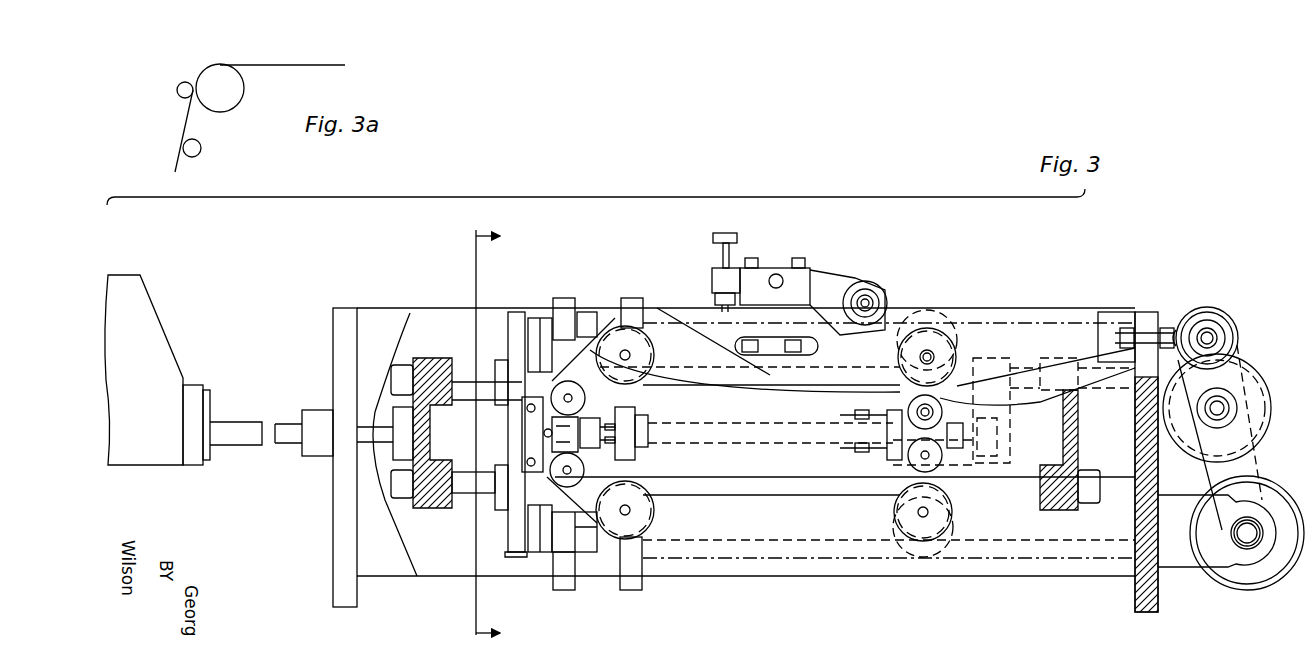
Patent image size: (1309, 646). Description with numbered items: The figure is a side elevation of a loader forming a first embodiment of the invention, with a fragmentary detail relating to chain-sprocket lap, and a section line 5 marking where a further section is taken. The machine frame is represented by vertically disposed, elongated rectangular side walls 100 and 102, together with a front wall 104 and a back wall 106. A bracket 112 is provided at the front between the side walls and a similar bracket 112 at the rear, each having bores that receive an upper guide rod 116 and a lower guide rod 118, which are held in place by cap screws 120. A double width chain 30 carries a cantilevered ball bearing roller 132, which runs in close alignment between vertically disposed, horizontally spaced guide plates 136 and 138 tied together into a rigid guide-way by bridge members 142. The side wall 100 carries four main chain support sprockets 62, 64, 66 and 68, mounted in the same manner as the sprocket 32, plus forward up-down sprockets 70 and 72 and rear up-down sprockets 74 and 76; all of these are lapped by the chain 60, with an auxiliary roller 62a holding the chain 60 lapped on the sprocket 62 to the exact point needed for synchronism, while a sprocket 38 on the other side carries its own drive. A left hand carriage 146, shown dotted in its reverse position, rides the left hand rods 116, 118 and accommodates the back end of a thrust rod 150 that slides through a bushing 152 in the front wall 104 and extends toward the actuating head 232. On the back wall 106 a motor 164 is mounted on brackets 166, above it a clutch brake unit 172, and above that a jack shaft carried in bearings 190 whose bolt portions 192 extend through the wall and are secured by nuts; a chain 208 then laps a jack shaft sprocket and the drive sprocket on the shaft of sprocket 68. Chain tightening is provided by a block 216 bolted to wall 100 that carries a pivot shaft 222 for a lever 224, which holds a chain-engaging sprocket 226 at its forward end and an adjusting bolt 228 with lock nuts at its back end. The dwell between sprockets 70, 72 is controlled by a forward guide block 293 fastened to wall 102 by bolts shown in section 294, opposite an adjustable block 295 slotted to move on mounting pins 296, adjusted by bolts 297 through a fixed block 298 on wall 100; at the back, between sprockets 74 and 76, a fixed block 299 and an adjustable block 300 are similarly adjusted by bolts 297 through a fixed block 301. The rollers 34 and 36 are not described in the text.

In FIG. 3, the section line 5 is at (499, 435).
In FIG. 3, the double width chain 30 is at (770, 574).
In FIG. 3, the sprocket 32 is at (607, 332).
In FIG. 3, the lower roller 34 is at (655, 523).
In FIG. 3, the lower gear 36 is at (940, 542).
In FIG. 3, the sprocket 38 is at (925, 312).
In FIG. 3A, the chain 60 is at (302, 63).
In FIG. 3, the chain 60 is at (722, 538).
In FIG. 3A, the main chain support sprocket 62 is at (232, 93).
In FIG. 3, the main chain support sprocket 62 is at (656, 353).
In FIG. 3A, the auxiliary roller 62a is at (177, 90).
In FIG. 3, the main chain support sprocket 64 is at (655, 507).
In FIG. 3, the main chain support sprocket 66 is at (900, 514).
In FIG. 3, the main chain support sprocket 68 is at (899, 356).
In FIG. 3A, the forward up-down sprocket 70 is at (201, 148).
In FIG. 3, the forward up-down sprocket 70 is at (579, 396).
In FIG. 3, the forward up-down sprocket 72 is at (560, 484).
In FIG. 3, the rear up-down sprocket 74 is at (935, 465).
In FIG. 3, the rear up-down sprocket 76 is at (905, 402).
In FIG. 3, the side wall 100 is at (374, 310).
In FIG. 3, the side wall 102 is at (436, 310).
In FIG. 3, the front wall 104 is at (345, 611).
In FIG. 3, the back wall 106 is at (1148, 612).
In FIG. 3, the bracket 112 is at (436, 359).
In FIG. 3, the upper guide rod 116 is at (489, 372).
In FIG. 3, the lower guide rod 118 is at (460, 497).
In FIG. 3, the cap screw 120 is at (400, 490).
In FIG. 3, the cantilevered roller 132 is at (548, 433).
In FIG. 3, the guide plate 136 is at (515, 310).
In FIG. 3, the guide plate 138 is at (632, 298).
In FIG. 3, the bridge member 142 is at (534, 310).
In FIG. 3, the left hand carriage 146 is at (497, 508).
In FIG. 3, the thrust rod 150 is at (238, 422).
In FIG. 3, the bushing 152 is at (321, 412).
In FIG. 3, the motor 164 is at (1285, 478).
In FIG. 3, the bracket 166 is at (1217, 531).
In FIG. 3, the clutch brake unit 172 is at (1265, 374).
In FIG. 3, the bearing 190 is at (1225, 312).
In FIG. 3, the bolt portion 192 is at (1118, 328).
In FIG. 3, the chain 208 is at (1010, 312).
In FIG. 3, the block 216 is at (770, 268).
In FIG. 3, the pivot shaft 222 is at (780, 272).
In FIG. 3, the lever 224 is at (835, 278).
In FIG. 3, the chain-engaging sprocket 226 is at (885, 292).
In FIG. 3, the adjusting bolt 228 is at (728, 233).
In FIG. 3, the actuating head 232 is at (195, 318).
In FIG. 3, the forward guide block 293 is at (531, 462).
In FIG. 3, the bolt 294 is at (531, 408).
In FIG. 3, the adjustable block 295 is at (552, 425).
In FIG. 3, the mounting pin 296 is at (552, 445).
In FIG. 3, the bolt 297 is at (645, 458).
In FIG. 3, the fixed block 298 is at (646, 404).
In FIG. 3, the fixed block 299 is at (963, 423).
In FIG. 3, the adjustable block 300 is at (887, 405).
In FIG. 3, the fixed block 301 is at (880, 450).